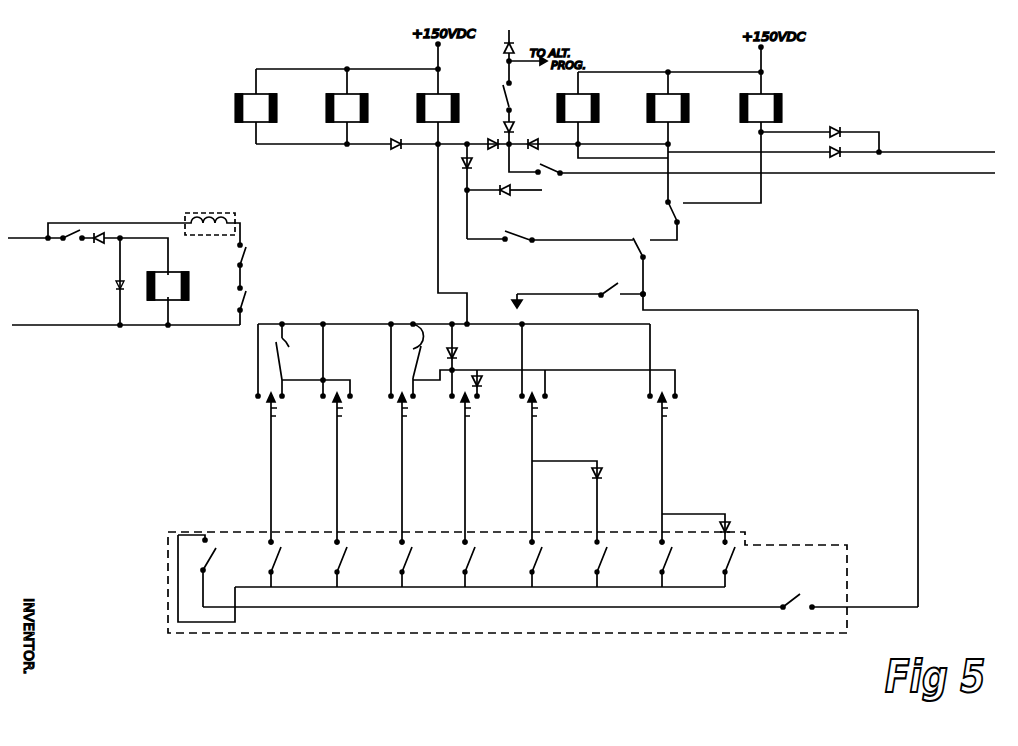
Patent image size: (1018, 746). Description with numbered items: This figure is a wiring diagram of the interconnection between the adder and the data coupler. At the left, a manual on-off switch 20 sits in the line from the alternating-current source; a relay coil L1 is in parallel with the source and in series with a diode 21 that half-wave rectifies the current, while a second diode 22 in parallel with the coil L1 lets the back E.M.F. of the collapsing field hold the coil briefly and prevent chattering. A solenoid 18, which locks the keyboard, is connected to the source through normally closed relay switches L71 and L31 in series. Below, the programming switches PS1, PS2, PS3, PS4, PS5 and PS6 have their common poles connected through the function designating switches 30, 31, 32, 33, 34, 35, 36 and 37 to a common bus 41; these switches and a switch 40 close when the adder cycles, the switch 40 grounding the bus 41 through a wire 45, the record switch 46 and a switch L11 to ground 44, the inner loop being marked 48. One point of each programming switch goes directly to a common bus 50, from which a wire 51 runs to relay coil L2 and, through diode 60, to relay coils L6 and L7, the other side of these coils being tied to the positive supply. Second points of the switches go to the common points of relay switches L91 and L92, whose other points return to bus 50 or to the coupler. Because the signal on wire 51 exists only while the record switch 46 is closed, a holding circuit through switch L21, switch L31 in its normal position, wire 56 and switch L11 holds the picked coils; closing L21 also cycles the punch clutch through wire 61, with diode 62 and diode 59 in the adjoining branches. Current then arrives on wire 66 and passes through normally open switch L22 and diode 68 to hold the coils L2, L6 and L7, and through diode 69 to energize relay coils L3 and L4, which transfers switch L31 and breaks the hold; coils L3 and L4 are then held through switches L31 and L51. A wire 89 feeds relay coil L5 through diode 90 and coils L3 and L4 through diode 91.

The solenoid 18 is at (214, 215).
The manual on-off switch 20 is at (67, 240).
The diode 21 is at (97, 248).
The second diode 22 is at (116, 287).
The relay coil L1 is at (168, 286).
The relay switch L71 is at (246, 252).
The relay switch L31 is at (246, 296).
The relay coil L7 is at (256, 108).
The relay coil L6 is at (347, 108).
The relay coil L2 is at (438, 108).
The relay coil L3 is at (578, 108).
The relay coil L4 is at (668, 108).
The relay coil L5 is at (761, 108).
The diode 60 is at (395, 150).
The diode 68 is at (492, 139).
The diode 69 is at (531, 139).
The diode 59 is at (472, 166).
The wire 61 is at (494, 195).
The diode 62 is at (507, 196).
The relay switch L21 is at (519, 245).
The relay switch L22 is at (552, 177).
The wire 51 is at (438, 251).
The diode 90 is at (839, 120).
The diode 91 is at (831, 154).
The wire 89 is at (922, 149).
The wire 66 is at (917, 174).
The relay switch L51 is at (679, 211).
The wire 56 is at (645, 284).
The wire 45 is at (918, 448).
The relay switch L11 is at (636, 287).
The ground 44 is at (520, 308).
The common bus 50 is at (388, 323).
The relay switch L92 is at (295, 360).
The relay switch L91 is at (414, 322).
The programming switch PS6 is at (277, 408).
The programming switch PS5 is at (343, 408).
The programming switch PS4 is at (408, 408).
The programming switch PS3 is at (471, 408).
The programming switch PS2 is at (538, 408).
The programming switch PS1 is at (668, 408).
The switch 40 is at (219, 560).
The conductor 48 is at (203, 630).
The common bus 41 is at (498, 596).
The record switch 46 is at (796, 604).
The function designating switch 37 is at (278, 555).
The function designating switch 36 is at (344, 555).
The function designating switch 35 is at (409, 555).
The function designating switch 34 is at (472, 555).
The function designating switch 33 is at (539, 555).
The function designating switch 32 is at (604, 555).
The function designating switch 31 is at (669, 555).
The function designating switch 30 is at (732, 555).